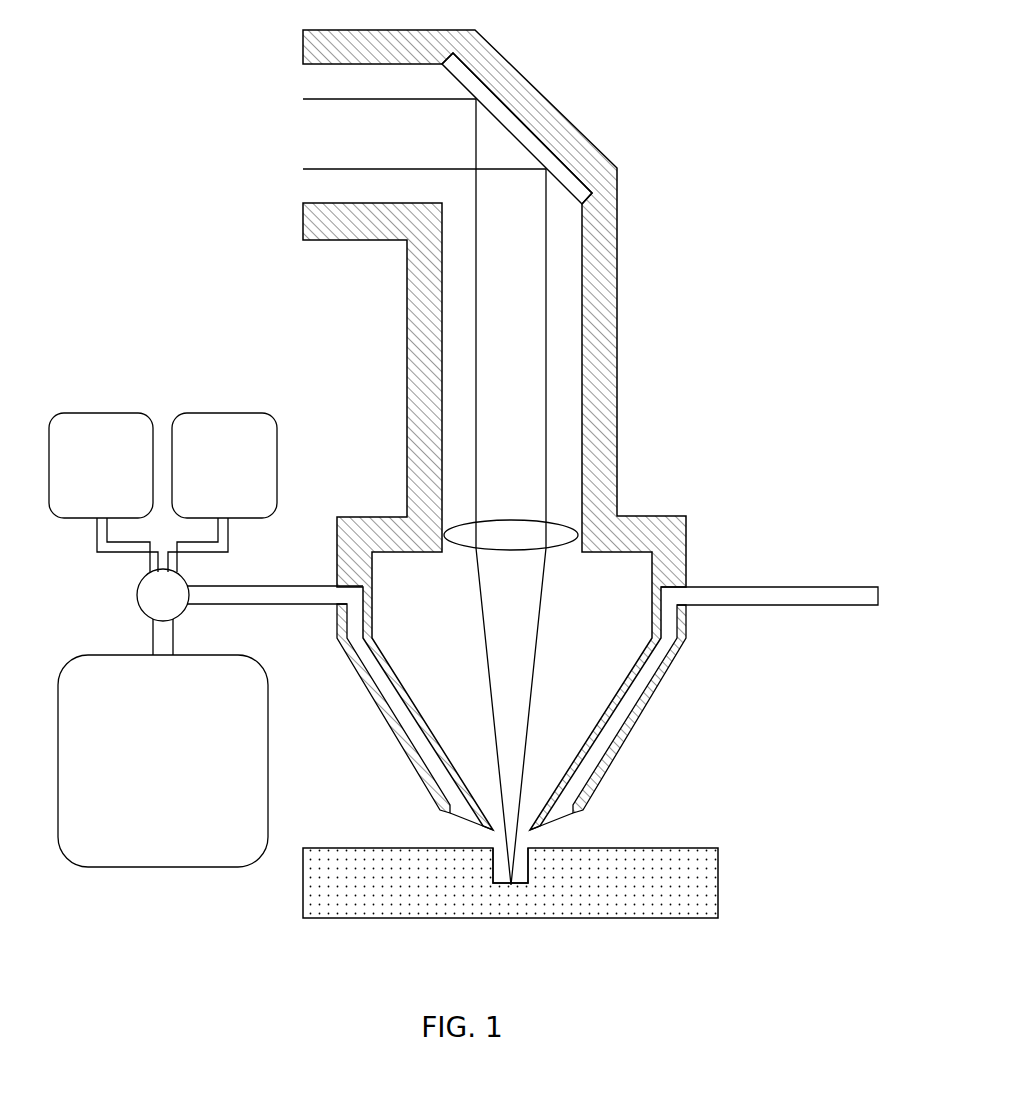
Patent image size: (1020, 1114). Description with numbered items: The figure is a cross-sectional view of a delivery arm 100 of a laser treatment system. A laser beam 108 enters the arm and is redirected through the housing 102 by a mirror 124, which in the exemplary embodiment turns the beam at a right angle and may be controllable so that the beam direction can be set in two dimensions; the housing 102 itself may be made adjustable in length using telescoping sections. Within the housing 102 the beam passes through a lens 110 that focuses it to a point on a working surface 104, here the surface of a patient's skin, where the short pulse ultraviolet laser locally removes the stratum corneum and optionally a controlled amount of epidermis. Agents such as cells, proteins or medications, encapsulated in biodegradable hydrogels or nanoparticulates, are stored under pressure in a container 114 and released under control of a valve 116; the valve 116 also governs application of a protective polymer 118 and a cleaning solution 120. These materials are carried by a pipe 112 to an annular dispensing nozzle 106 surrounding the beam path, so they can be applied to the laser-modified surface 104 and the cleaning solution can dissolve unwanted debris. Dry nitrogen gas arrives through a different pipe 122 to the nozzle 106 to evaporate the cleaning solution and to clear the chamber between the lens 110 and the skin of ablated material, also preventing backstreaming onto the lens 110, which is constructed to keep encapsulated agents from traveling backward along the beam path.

The delivery arm 100 is at (686, 58).
The housing 102 is at (617, 330).
The working surface 104 is at (720, 850).
The nozzle 106 is at (536, 828).
The laser beam 108 is at (501, 884).
The lens 110 is at (578, 540).
The pipe 112 is at (330, 586).
The pressurized container 114 is at (144, 774).
The valve 116 is at (182, 613).
The protective polymer 118 is at (82, 476).
The cleaning solution 120 is at (205, 476).
The pipe 122 is at (757, 587).
The mirror 124 is at (537, 112).